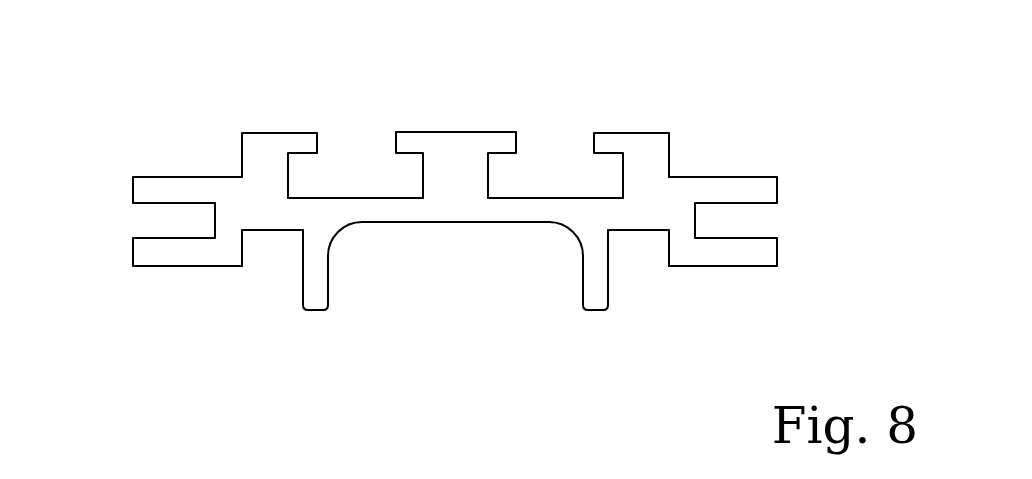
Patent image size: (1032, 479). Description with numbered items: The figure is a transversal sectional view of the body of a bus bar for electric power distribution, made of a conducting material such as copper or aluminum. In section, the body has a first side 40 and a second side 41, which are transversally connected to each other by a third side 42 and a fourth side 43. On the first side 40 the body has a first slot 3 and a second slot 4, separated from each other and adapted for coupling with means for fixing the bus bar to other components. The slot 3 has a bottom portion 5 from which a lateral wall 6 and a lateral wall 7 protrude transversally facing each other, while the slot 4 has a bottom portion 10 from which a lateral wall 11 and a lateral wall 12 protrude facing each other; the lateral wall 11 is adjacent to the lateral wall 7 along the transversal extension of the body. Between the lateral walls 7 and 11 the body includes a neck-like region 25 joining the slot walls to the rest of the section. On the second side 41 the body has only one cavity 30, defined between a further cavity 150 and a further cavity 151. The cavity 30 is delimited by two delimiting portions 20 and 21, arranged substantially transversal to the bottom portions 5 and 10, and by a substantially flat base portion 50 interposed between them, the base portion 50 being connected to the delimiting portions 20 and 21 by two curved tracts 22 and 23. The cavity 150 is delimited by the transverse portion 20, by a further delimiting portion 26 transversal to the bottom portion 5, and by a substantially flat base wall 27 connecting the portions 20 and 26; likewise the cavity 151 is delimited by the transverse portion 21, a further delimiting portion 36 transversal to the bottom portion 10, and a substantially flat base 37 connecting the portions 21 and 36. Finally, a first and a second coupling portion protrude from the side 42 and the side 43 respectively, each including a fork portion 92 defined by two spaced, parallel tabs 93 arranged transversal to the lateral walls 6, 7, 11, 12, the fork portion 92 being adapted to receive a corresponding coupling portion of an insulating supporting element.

The first slot 3 is at (331, 177).
The second slot 4 is at (535, 172).
The bottom portion 5 is at (356, 200).
The lateral wall 6 is at (293, 182).
The lateral wall 7 is at (421, 179).
The bottom portion 10 is at (556, 198).
The lateral wall 11 is at (495, 178).
The lateral wall 12 is at (618, 178).
The delimiting portion 20 is at (323, 266).
The delimiting portion 21 is at (588, 266).
The curved tract 22 is at (342, 239).
The curved tract 23 is at (564, 236).
The neck 25 is at (470, 173).
The further delimiting portion 26 is at (237, 250).
The base wall 27 is at (273, 226).
The cavity 30 is at (467, 272).
The further delimiting portion 36 is at (673, 246).
The base 37 is at (640, 226).
The first side 40 is at (430, 129).
The second side 41 is at (320, 322).
The third side 42 is at (238, 157).
The fourth side 43 is at (672, 160).
The base portion 50 is at (485, 226).
The fork portion 92 is at (122, 218).
The tabs 93 is at (161, 190).
The further cavity 150 is at (267, 262).
The further cavity 151 is at (645, 263).